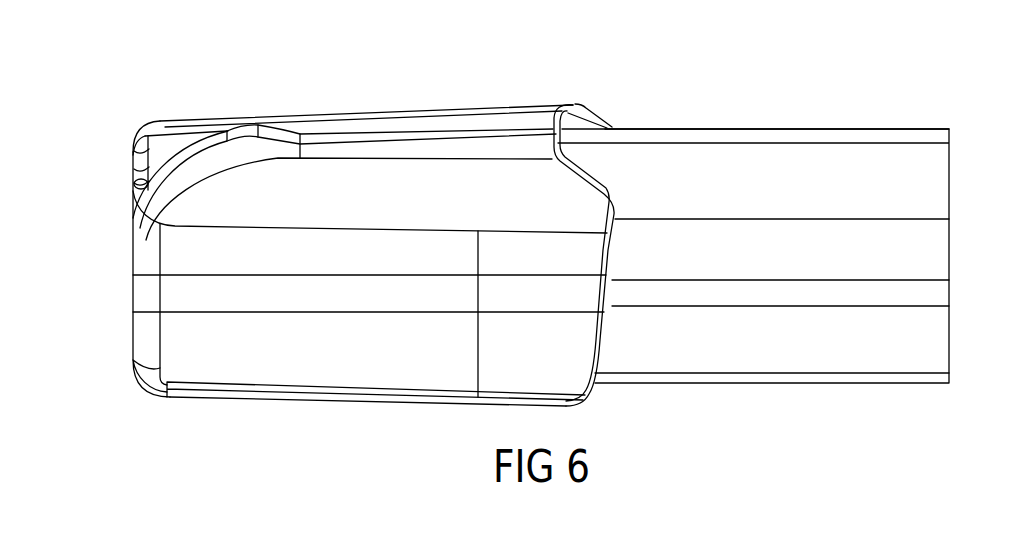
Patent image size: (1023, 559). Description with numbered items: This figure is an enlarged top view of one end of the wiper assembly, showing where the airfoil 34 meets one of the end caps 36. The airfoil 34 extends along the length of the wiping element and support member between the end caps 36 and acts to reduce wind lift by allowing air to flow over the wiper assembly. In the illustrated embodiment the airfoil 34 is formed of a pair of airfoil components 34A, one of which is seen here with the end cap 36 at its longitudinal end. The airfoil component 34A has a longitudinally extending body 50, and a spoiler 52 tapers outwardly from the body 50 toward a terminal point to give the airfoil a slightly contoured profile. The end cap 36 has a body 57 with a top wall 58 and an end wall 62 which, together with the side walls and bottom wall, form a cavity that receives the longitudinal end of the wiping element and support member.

The airfoil 34 is at (785, 209).
The airfoil component 34A is at (894, 128).
The end cap 36 is at (386, 106).
The body 50 is at (938, 293).
The spoiler 52 is at (930, 191).
The body 57 is at (158, 120).
The top wall 58 is at (338, 229).
The end wall 62 is at (132, 264).